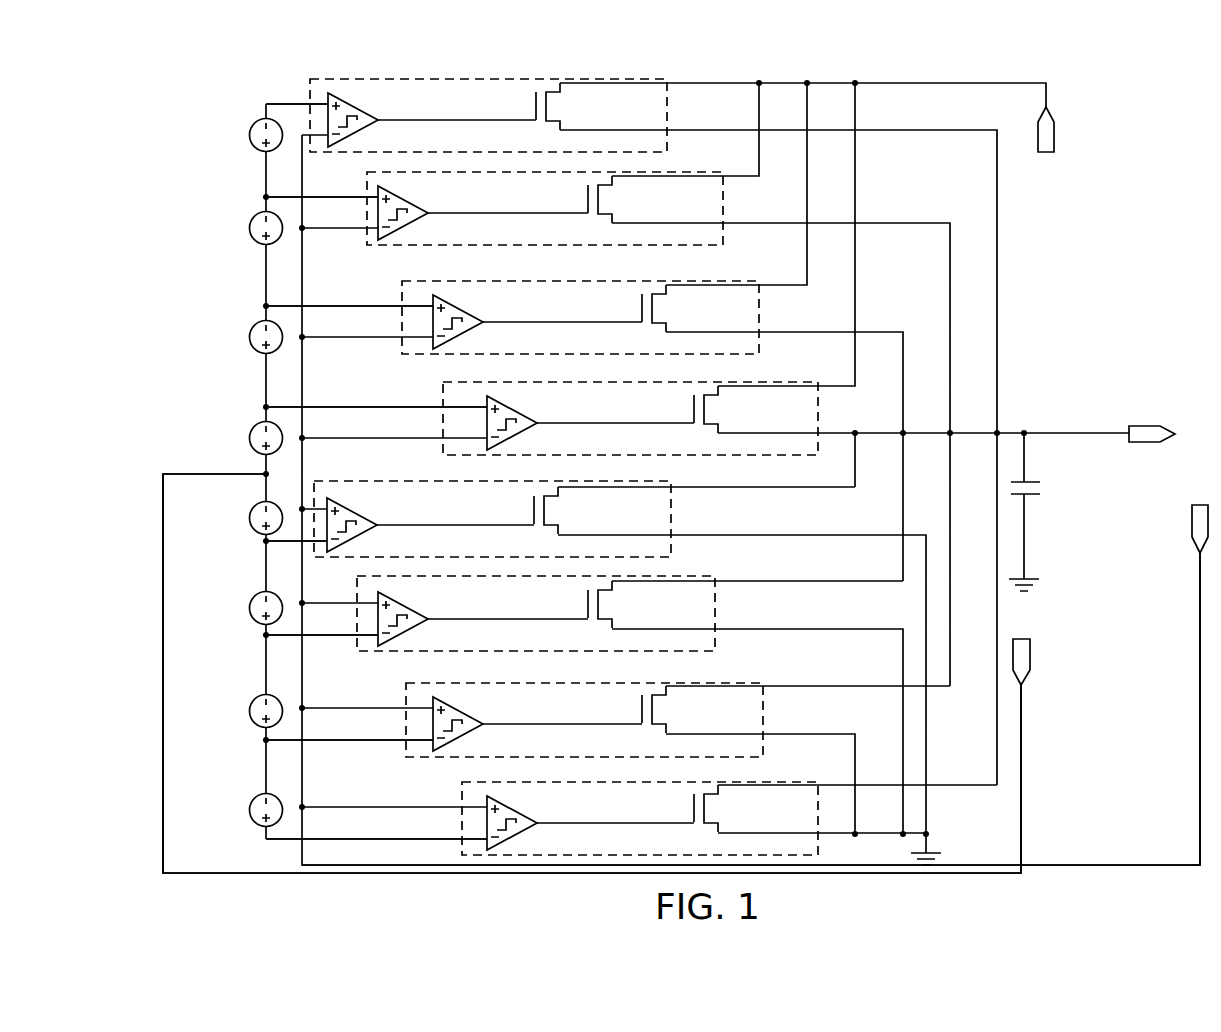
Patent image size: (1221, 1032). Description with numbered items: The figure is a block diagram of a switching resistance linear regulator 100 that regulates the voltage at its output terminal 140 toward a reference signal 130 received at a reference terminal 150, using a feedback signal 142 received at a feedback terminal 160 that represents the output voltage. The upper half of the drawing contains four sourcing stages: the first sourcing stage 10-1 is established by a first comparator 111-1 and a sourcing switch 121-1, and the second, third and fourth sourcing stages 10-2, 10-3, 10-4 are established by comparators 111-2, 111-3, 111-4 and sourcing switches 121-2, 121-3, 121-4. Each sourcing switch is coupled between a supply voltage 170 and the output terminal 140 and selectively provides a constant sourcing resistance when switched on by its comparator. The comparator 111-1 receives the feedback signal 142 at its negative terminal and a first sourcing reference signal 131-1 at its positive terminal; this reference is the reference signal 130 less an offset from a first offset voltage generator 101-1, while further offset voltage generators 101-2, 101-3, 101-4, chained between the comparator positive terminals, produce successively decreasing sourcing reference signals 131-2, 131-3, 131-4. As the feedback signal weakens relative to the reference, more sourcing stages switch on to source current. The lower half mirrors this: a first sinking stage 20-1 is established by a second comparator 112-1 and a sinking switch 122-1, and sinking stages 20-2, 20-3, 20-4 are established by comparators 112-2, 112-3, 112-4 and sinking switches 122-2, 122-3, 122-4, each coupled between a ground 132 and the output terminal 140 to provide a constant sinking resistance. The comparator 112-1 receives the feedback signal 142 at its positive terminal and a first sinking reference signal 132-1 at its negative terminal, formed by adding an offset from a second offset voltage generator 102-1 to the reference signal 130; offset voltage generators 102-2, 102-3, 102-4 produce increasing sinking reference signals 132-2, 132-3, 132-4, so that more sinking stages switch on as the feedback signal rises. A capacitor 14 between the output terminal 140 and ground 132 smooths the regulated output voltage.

The switching resistance linear regulator 100 is at (685, 476).
The first sourcing stage 10-1 is at (666, 418).
The second sourcing stage 10-2 is at (622, 317).
The third sourcing stage 10-3 is at (583, 208).
The fourth sourcing stage 10-4 is at (525, 115).
The first sinking stage 20-1 is at (547, 519).
The second sinking stage 20-2 is at (588, 613).
The third sinking stage 20-3 is at (630, 720).
The fourth sinking stage 20-4 is at (606, 816).
The first offset voltage generator 101-1 is at (249, 438).
The offset voltage generator 101-2 is at (249, 337).
The offset voltage generator 101-3 is at (249, 228).
The offset voltage generator 101-4 is at (249, 135).
The second offset voltage generator 102-1 is at (249, 518).
The offset voltage generator 102-2 is at (249, 608).
The offset voltage generator 102-3 is at (249, 711).
The offset voltage generator 102-4 is at (249, 810).
The first comparator 111-1 is at (518, 410).
The comparator 111-2 is at (466, 313).
The comparator 111-3 is at (411, 204).
The comparator 111-4 is at (361, 111).
The second comparator 112-1 is at (359, 516).
The comparator 112-2 is at (410, 610).
The comparator 112-3 is at (465, 715).
The comparator 112-4 is at (518, 812).
The sourcing switch 121-1 is at (712, 423).
The sourcing switch 121-2 is at (656, 319).
The sourcing switch 121-3 is at (604, 210).
The sourcing switch 121-4 is at (550, 117).
The sinking switch 122-1 is at (560, 522).
The sinking switch 122-2 is at (606, 616).
The sinking switch 122-3 is at (660, 724).
The sinking switch 122-4 is at (712, 825).
The first sourcing reference signal 131-1 is at (266, 407).
The second sourcing reference signal 131-2 is at (266, 306).
The sourcing reference signal 131-3 is at (266, 197).
The sourcing reference signal 131-4 is at (266, 104).
The first sinking reference signal 132-1 is at (266, 541).
The second sinking reference signal 132-2 is at (266, 635).
The sinking reference signal 132-3 is at (266, 740).
The sinking reference signal 132-4 is at (266, 839).
The reference signal 130 is at (1021, 762).
The feedback signal 142 is at (751, 709).
The output terminal 140 is at (1140, 425).
The reference terminal 150 is at (1030, 656).
The feedback terminal 160 is at (1192, 541).
The supply voltage 170 is at (1047, 146).
The capacitor 14 is at (1027, 478).
The ground 132 is at (1024, 579).